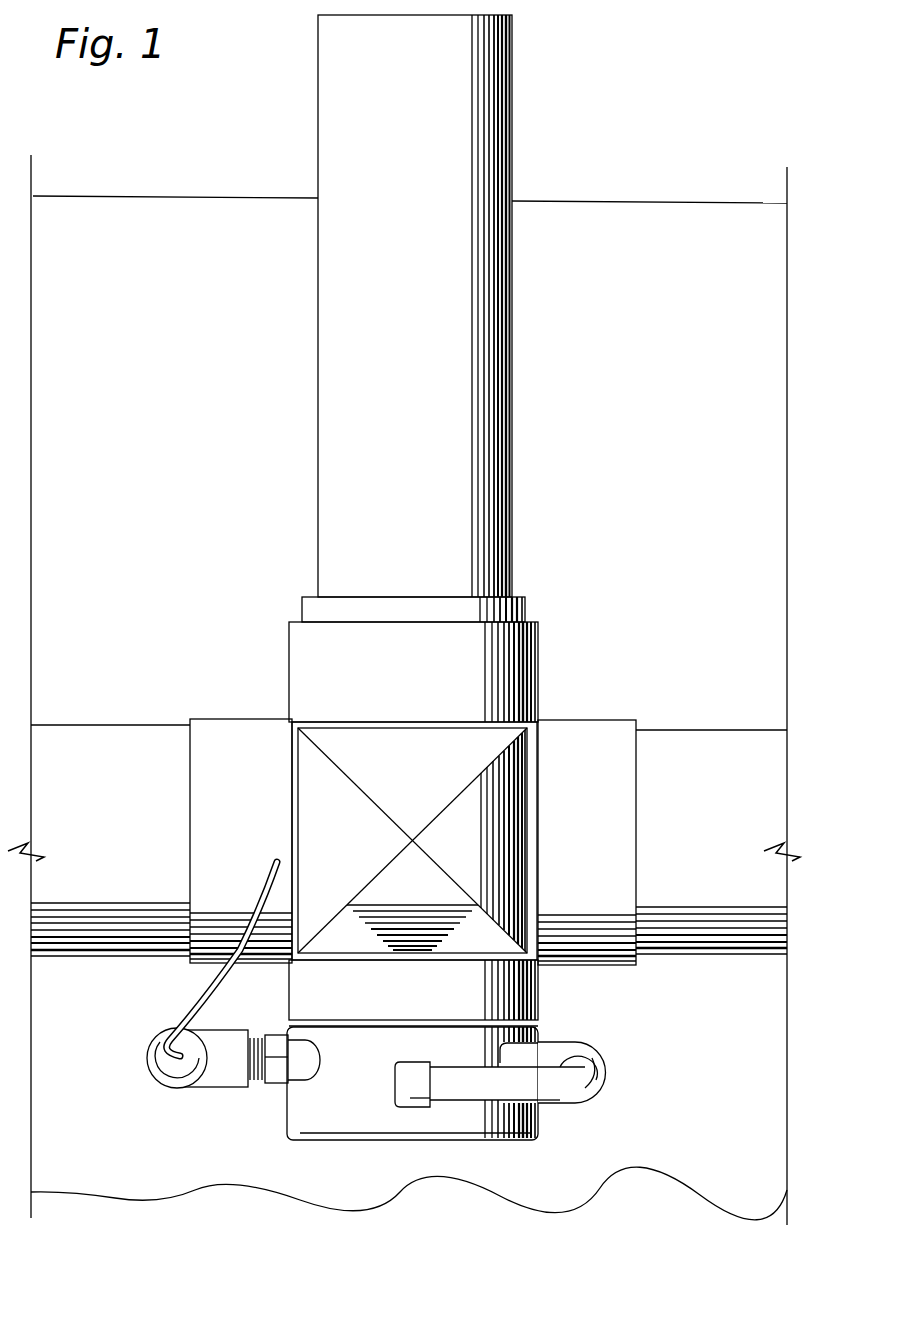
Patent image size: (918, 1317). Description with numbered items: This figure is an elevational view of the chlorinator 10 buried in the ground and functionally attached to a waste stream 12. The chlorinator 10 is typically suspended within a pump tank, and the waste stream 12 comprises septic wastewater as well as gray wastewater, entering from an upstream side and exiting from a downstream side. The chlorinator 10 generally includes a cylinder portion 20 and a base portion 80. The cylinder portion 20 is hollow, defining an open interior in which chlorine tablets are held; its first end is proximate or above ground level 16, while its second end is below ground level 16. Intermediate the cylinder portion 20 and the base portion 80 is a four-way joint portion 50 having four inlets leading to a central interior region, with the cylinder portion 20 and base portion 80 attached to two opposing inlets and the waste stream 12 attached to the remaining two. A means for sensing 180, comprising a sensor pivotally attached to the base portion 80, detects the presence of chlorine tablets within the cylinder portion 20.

The chlorinator 10 is at (651, 131).
The waste stream 12 is at (97, 725).
The ground level 16 is at (183, 196).
The cylinder portion 20 is at (665, 411).
The 4-way joint portion 50 is at (388, 740).
The base portion 80 is at (362, 1149).
The means for sensing 180 is at (607, 1137).